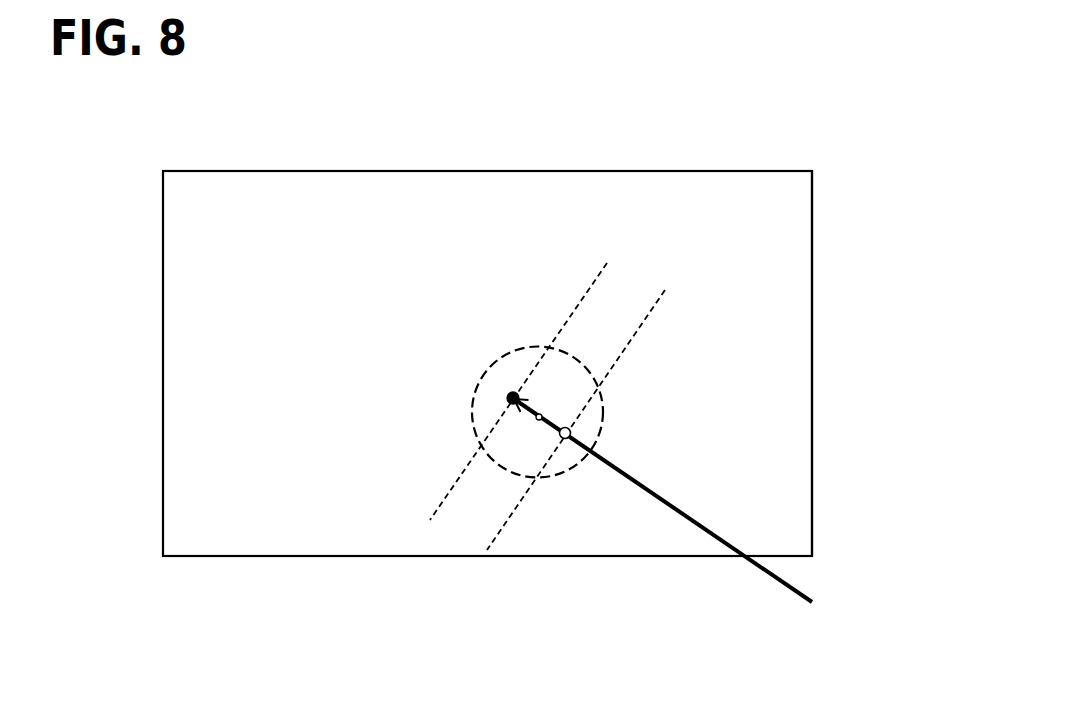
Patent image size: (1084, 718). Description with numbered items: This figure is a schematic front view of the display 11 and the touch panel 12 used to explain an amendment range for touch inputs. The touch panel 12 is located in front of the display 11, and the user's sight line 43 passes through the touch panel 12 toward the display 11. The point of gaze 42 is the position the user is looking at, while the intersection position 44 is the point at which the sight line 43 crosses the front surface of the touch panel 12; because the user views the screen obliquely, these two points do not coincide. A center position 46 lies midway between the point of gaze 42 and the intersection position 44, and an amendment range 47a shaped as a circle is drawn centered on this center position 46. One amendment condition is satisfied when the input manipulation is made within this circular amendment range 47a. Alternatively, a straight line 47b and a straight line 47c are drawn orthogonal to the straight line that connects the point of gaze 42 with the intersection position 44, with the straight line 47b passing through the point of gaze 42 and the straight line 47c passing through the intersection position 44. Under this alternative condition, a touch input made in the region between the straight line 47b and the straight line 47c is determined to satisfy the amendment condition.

The display 11 is at (725, 171).
The touch panel 12 is at (781, 178).
The point of gaze 42 is at (513, 397).
The sight line 43 is at (755, 568).
The intersection position 44 is at (571, 430).
The center position 46 is at (538, 420).
The amendment range 47a is at (596, 443).
The straight line 47b is at (603, 271).
The straight line 47c is at (662, 299).